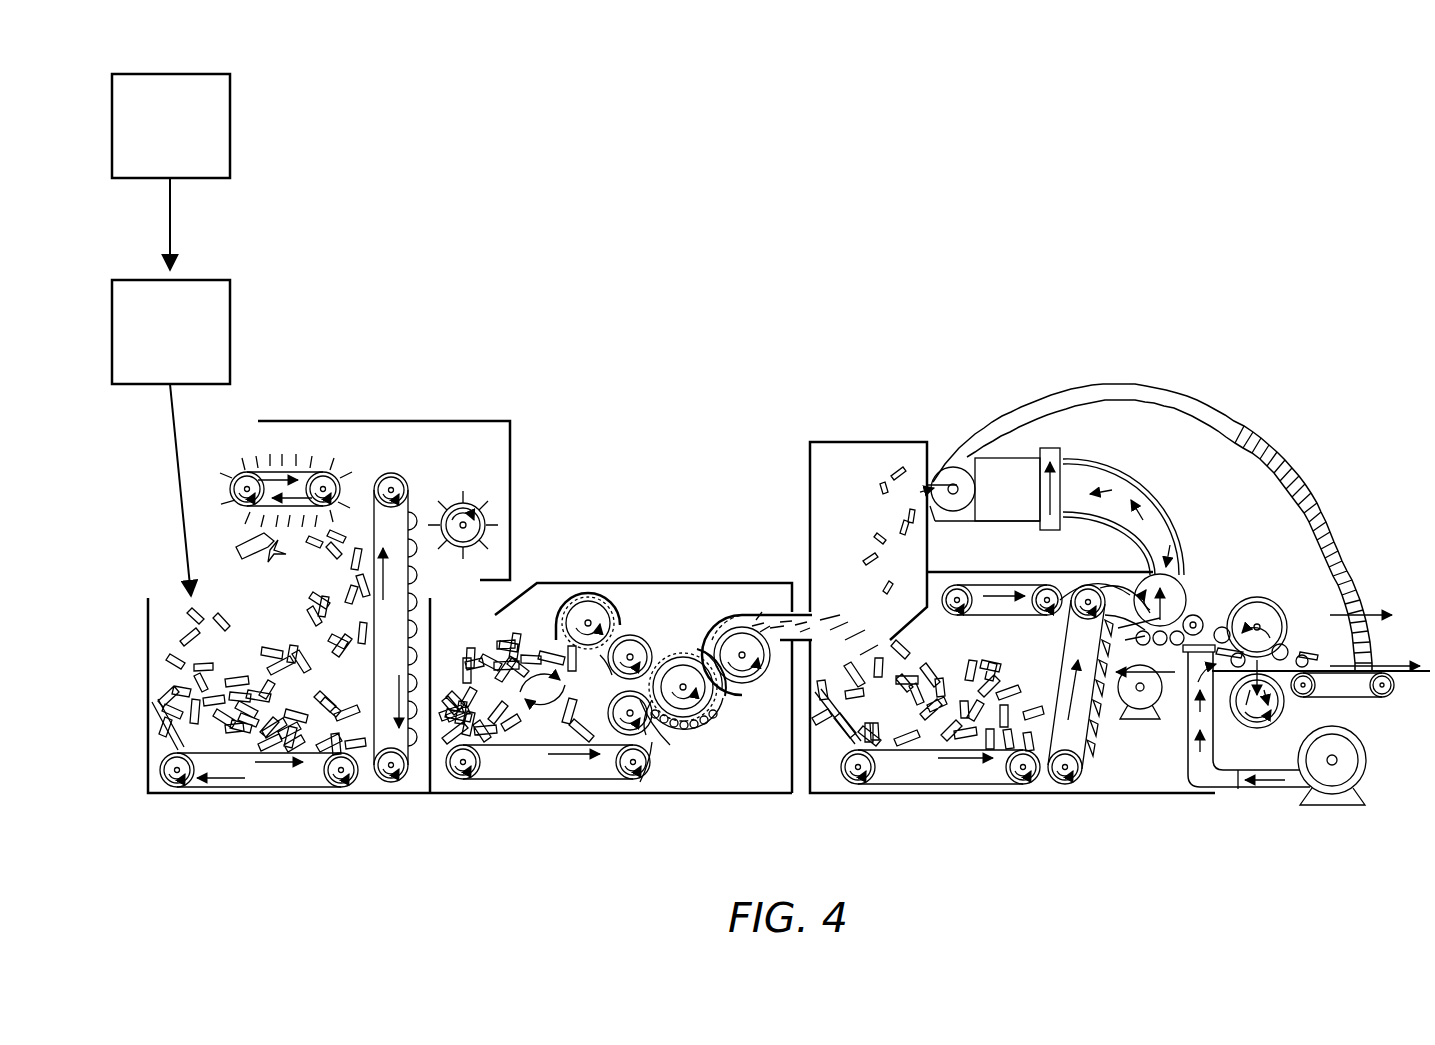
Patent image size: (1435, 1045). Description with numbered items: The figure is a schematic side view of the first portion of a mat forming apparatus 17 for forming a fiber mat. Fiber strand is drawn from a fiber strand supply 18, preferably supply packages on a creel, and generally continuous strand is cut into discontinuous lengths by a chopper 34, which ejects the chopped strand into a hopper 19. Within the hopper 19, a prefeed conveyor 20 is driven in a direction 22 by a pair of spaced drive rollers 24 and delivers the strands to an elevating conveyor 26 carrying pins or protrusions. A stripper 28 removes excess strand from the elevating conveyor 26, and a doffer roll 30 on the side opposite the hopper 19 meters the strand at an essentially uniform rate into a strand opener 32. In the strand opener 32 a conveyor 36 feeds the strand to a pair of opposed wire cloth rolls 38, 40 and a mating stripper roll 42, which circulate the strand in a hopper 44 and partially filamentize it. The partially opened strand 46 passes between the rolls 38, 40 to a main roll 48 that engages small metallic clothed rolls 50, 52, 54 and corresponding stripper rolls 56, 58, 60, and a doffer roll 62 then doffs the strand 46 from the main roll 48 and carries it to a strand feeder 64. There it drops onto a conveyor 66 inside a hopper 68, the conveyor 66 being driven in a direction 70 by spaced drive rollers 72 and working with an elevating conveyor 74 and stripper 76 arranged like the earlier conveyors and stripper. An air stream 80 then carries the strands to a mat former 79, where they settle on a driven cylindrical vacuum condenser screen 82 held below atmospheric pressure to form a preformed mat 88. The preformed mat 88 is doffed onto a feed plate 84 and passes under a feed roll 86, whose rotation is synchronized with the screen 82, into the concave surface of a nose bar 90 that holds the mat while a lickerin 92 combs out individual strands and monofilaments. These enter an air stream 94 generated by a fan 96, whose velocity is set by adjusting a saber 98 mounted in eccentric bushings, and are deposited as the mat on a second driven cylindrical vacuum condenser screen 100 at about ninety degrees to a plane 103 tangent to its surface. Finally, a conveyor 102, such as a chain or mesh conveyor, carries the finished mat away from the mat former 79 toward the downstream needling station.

The mat forming apparatus 17 is at (638, 388).
The fiber strand supply 18 is at (232, 129).
The hopper 19 is at (316, 418).
The prefeed conveyor 20 is at (245, 790).
The direction 22 is at (288, 770).
The drive rollers 24 is at (195, 778).
The elevating conveyor 26 is at (408, 780).
The stripper 28 is at (303, 470).
The doffer roll 30 is at (461, 503).
The strand opener 32 is at (548, 583).
The chopper 34 is at (232, 316).
The conveyor 36 is at (570, 780).
The wire cloth roll 38 is at (648, 784).
The wire cloth roll 40 is at (669, 698).
The stripper roll 42 is at (584, 600).
The hopper 44 is at (676, 772).
The partially opened strand 46 is at (648, 636).
The main roll 48 is at (690, 640).
The metallic clothed roll 50 is at (686, 722).
The metallic clothed roll 52 is at (712, 738).
The metallic clothed roll 54 is at (720, 716).
The stripper roll 56 is at (700, 742).
The stripper roll 58 is at (726, 727).
The stripper roll 60 is at (724, 697).
The doffer roll 62 is at (760, 622).
The strand feeder 64 is at (882, 442).
The conveyor 66 is at (925, 793).
The hopper 68 is at (940, 572).
The direction 70 is at (968, 784).
The drive rollers 72 is at (1032, 784).
The elevating conveyor 74 is at (1098, 750).
The stripper 76 is at (1003, 585).
The mat former 79 is at (1186, 555).
The air stream 80 is at (1150, 650).
The vacuum condenser screen 82 is at (1185, 590).
The feed plate 84 is at (1180, 660).
The feed roll 86 is at (1226, 627).
The preformed mat 88 is at (1215, 640).
The nose bar 90 is at (1222, 665).
The lickerin 92 is at (1270, 600).
The air stream 94 is at (1278, 792).
The fan 96 is at (1368, 772).
The saber 98 is at (1242, 788).
The vacuum condenser screen 100 is at (1250, 728).
The conveyor 102 is at (1368, 698).
The plane 103 is at (1384, 660).